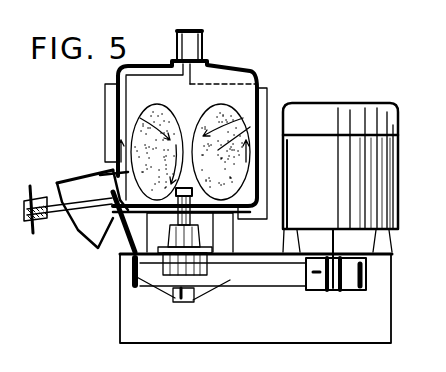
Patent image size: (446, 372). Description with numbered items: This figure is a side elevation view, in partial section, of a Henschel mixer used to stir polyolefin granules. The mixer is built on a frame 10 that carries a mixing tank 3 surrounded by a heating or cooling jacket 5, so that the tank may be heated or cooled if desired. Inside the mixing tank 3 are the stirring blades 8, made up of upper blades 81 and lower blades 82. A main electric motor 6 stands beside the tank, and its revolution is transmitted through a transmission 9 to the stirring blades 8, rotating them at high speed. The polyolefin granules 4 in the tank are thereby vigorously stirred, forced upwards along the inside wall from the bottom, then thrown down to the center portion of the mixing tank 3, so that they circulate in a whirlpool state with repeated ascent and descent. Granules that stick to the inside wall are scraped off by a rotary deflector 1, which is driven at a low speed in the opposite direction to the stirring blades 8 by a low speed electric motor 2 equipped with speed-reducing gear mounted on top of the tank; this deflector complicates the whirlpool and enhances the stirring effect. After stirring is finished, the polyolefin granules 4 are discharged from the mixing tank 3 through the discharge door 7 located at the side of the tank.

The rotary deflector 1 is at (123, 123).
The electric motor equipped with speed-reducing gear 2 is at (197, 45).
The mixing tank 3 is at (220, 92).
The polyolefin granules 4 is at (262, 128).
The heating or cooling jacket 5 is at (255, 125).
The main electric motor 6 is at (337, 110).
The discharge door 7 is at (112, 206).
The stirring blades 8 is at (110, 288).
The upper blades 81 is at (63, 237).
The lower blades 82 is at (80, 237).
The transmission 9 is at (265, 288).
The frame 10 is at (392, 332).